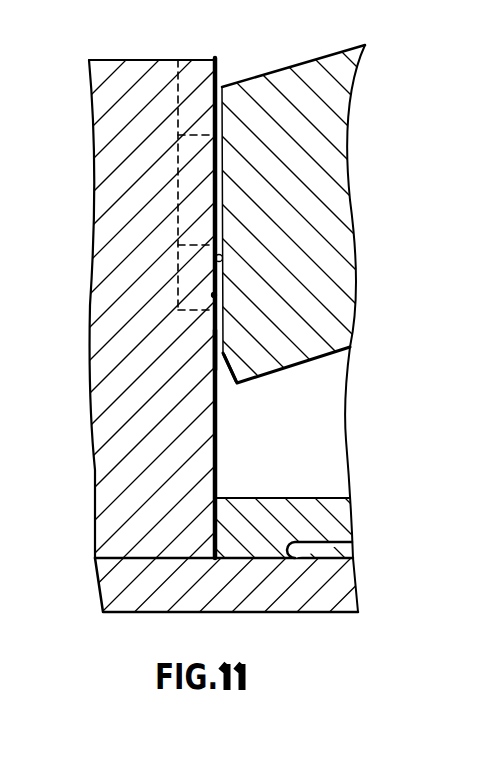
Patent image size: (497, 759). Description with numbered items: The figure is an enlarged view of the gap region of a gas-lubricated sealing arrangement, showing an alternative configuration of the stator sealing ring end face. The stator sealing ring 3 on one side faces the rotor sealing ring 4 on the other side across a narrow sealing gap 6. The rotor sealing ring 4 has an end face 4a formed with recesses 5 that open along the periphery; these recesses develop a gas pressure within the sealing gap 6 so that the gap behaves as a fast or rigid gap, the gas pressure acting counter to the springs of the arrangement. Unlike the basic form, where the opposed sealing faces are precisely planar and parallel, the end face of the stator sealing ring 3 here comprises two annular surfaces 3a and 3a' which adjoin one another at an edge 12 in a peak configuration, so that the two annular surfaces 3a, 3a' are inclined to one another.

The stator sealing ring 3 is at (330, 88).
The annular surface 3a is at (313, 265).
The annular surface 3a' is at (263, 389).
The rotor sealing ring 4 is at (112, 167).
The end face 4a is at (216, 262).
The recesses 5 is at (177, 90).
The sealing gap 6 is at (221, 87).
The edge 12 is at (214, 349).